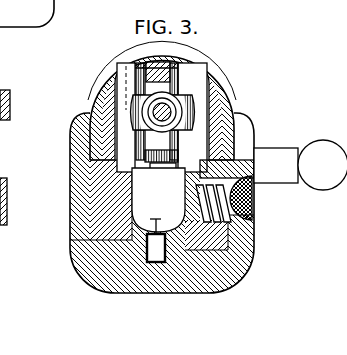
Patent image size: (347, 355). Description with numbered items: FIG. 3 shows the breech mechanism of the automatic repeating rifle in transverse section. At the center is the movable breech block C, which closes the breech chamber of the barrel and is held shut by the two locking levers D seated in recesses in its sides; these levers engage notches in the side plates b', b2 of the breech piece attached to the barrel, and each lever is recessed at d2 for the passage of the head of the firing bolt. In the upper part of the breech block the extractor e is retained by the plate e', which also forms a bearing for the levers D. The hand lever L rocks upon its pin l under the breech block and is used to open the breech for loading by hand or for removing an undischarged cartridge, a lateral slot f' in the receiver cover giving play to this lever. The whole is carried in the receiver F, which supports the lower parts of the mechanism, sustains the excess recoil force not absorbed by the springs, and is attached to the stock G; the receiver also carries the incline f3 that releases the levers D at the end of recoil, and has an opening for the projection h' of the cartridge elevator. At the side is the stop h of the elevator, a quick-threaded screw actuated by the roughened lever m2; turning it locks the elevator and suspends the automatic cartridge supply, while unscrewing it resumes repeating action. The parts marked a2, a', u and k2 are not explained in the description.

The movable breech block C is at (198, 63).
The locking levers D is at (100, 110).
The extractor e is at (162, 66).
The plate e' is at (162, 61).
The receiver F is at (120, 40).
The stock G is at (162, 293).
The hand lever L is at (300, 165).
The stem a2 is at (128, 92).
The stem foot a' is at (163, 170).
The side plate b2 is at (137, 124).
The side plate b' is at (192, 117).
The nut u is at (190, 96).
The recess d2 is at (216, 92).
The lateral slot f' is at (238, 150).
The inclined plane f3 is at (78, 190).
The pin l is at (178, 184).
The spring leaves k2 is at (194, 197).
The stop h is at (164, 216).
The projection h' is at (156, 248).
The lever m2 is at (251, 201).